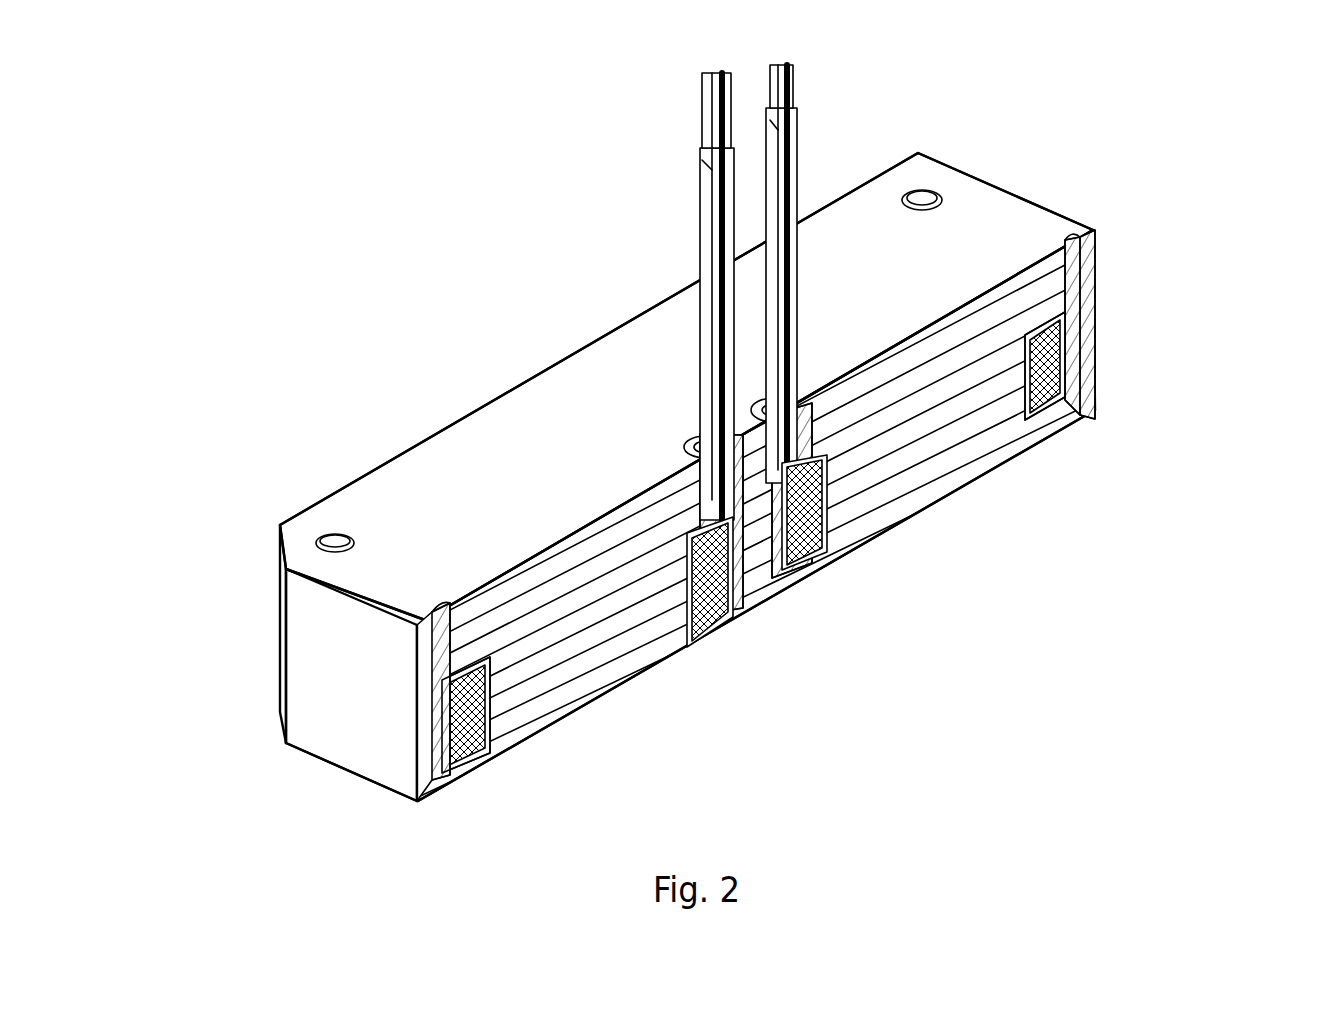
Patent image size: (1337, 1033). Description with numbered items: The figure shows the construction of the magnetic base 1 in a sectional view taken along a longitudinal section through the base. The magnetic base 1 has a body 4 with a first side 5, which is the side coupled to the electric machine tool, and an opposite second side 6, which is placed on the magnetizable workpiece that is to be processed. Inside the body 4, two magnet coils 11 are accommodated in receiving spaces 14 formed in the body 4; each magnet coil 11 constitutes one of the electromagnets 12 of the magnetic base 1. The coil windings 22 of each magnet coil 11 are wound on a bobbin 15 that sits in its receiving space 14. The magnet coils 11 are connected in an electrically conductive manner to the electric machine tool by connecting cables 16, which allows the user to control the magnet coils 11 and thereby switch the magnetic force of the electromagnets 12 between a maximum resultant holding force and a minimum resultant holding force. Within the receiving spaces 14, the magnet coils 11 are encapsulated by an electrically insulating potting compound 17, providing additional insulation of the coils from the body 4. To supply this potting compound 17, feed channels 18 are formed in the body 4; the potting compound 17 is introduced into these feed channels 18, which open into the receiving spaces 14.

The magnetic base 1 is at (1068, 182).
The body 4 is at (948, 452).
The first side 5 is at (530, 435).
The second side 6 is at (553, 728).
The magnet coil 11 is at (766, 622).
The electromagnet 12 is at (708, 665).
The receiving space 14 is at (1078, 305).
The bobbin 15 is at (1050, 325).
The connecting cable 16 is at (708, 203).
The potting compound 17 is at (440, 652).
The feed channel 18 is at (432, 628).
The coil winding 22 is at (463, 778).